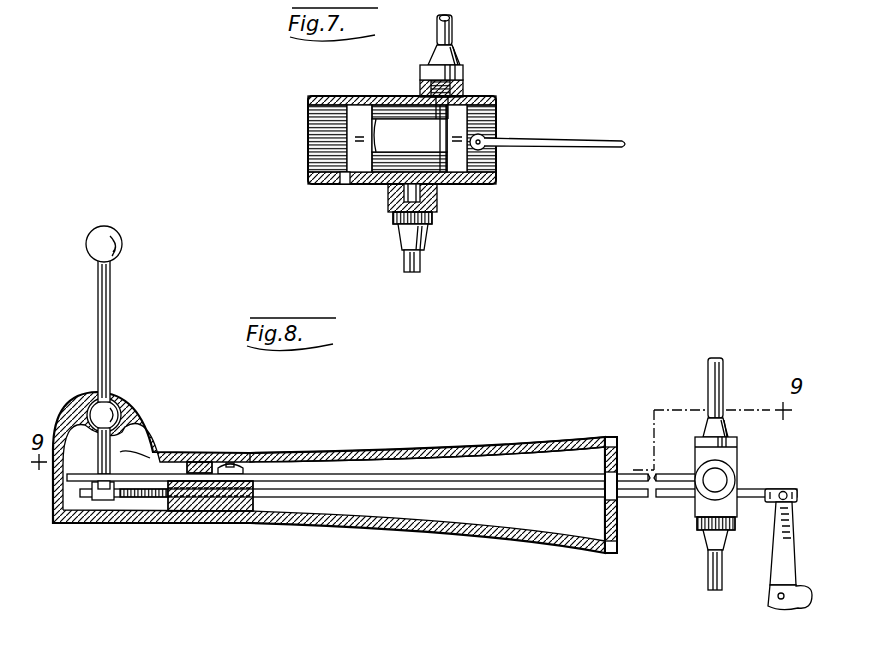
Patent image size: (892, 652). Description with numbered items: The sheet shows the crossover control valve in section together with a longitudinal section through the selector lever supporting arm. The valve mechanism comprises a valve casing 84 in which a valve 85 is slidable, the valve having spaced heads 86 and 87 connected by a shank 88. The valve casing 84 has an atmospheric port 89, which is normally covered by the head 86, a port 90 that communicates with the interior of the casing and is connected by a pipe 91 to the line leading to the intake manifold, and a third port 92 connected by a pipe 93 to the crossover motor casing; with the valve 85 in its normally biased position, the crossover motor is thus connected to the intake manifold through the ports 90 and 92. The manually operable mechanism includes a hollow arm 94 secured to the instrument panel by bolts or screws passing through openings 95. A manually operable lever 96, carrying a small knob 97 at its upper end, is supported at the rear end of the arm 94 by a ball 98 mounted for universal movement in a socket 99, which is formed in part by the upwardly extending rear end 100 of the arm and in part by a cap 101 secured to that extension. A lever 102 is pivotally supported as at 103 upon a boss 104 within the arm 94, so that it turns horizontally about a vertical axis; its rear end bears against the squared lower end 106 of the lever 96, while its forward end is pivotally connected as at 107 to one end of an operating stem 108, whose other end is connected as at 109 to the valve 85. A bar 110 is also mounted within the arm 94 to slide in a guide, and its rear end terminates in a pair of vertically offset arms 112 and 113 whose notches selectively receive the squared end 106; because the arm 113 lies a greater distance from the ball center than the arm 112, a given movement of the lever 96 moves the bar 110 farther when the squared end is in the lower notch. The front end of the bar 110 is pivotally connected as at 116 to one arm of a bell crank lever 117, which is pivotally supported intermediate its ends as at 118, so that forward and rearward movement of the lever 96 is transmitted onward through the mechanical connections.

In FIG. 7, the valve casing 84 is at (325, 97).
In FIG. 7, the valve 85 is at (344, 152).
In FIG. 7, the head 86 is at (358, 107).
In FIG. 7, the head 87 is at (470, 110).
In FIG. 7, the shank 88 is at (396, 150).
In FIG. 7, the atmospheric port 89 is at (352, 178).
In FIG. 7, the port 90 is at (426, 99).
In FIG. 7, the pipe 91 is at (452, 31).
In FIG. 7, the third port 92 is at (422, 184).
In FIG. 7, the pipe 93 is at (404, 260).
In FIG. 8, the pipe 93 is at (706, 574).
In FIG. 8, the hollow arm 94 is at (514, 452).
In FIG. 8, the openings 95 is at (618, 522).
In FIG. 8, the manually operable lever 96 is at (110, 335).
In FIG. 8, the knob 97 is at (122, 244).
In FIG. 8, the ball 98 is at (112, 405).
In FIG. 8, the socket 99 is at (128, 412).
In FIG. 8, the rear end 100 is at (158, 447).
In FIG. 8, the cap 101 is at (68, 412).
In FIG. 8, the lever 102 is at (414, 474).
In FIG. 8, the pivot 103 is at (240, 462).
In FIG. 8, the boss 104 is at (222, 500).
In FIG. 8, the squared lower end 106 is at (103, 500).
In FIG. 8, the pivotal connection 107 is at (733, 484).
In FIG. 7, the operating stem 108 is at (586, 139).
In FIG. 7, the connection 109 is at (487, 130).
In FIG. 8, the bar 110 is at (330, 495).
In FIG. 8, the arm 112 is at (165, 457).
In FIG. 8, the arm 113 is at (131, 498).
In FIG. 8, the pivotal connection 116 is at (786, 489).
In FIG. 8, the bell crank lever 117 is at (780, 568).
In FIG. 8, the pivot 118 is at (772, 598).